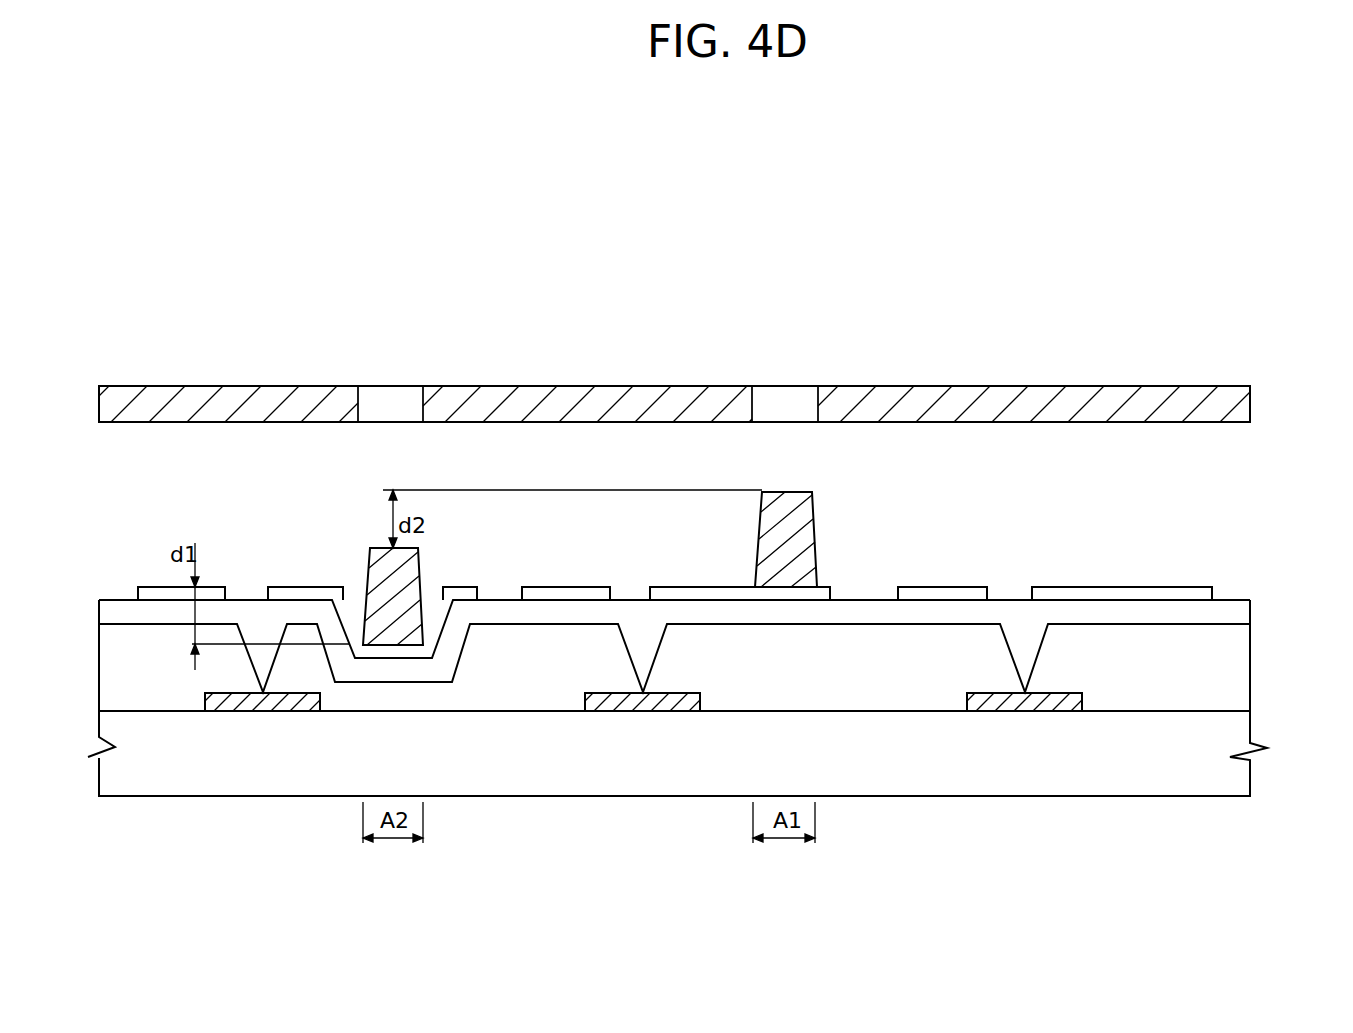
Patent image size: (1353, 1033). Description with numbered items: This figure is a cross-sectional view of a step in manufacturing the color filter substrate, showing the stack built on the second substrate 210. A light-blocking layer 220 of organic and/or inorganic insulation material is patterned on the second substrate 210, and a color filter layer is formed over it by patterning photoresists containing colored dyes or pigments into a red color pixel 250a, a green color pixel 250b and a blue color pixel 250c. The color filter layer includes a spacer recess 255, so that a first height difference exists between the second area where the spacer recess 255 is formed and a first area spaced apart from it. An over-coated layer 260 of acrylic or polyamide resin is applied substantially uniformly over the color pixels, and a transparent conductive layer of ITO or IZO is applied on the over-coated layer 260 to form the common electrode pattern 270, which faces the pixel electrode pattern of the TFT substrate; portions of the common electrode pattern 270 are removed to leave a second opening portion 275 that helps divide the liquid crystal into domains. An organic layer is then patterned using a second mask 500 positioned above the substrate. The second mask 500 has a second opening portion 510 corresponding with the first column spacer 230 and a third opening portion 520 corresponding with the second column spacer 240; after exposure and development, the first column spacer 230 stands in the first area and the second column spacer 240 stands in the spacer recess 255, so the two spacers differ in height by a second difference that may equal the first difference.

The second mask 500 is at (1177, 378).
The second opening portion 510 is at (782, 398).
The third opening portion 520 is at (395, 398).
The second substrate 210 is at (1242, 775).
The light-blocking layer 220 is at (1052, 708).
The first column spacer 230 is at (805, 540).
The second column spacer 240 is at (412, 561).
The red color pixel 250a is at (932, 643).
The green color pixel 250b is at (1240, 672).
The blue color pixel 250c is at (562, 643).
The spacer recess 255 is at (415, 684).
The over-coated layer 260 is at (1240, 613).
The common electrode pattern 270 is at (1190, 592).
The second opening portion 275 is at (1018, 596).